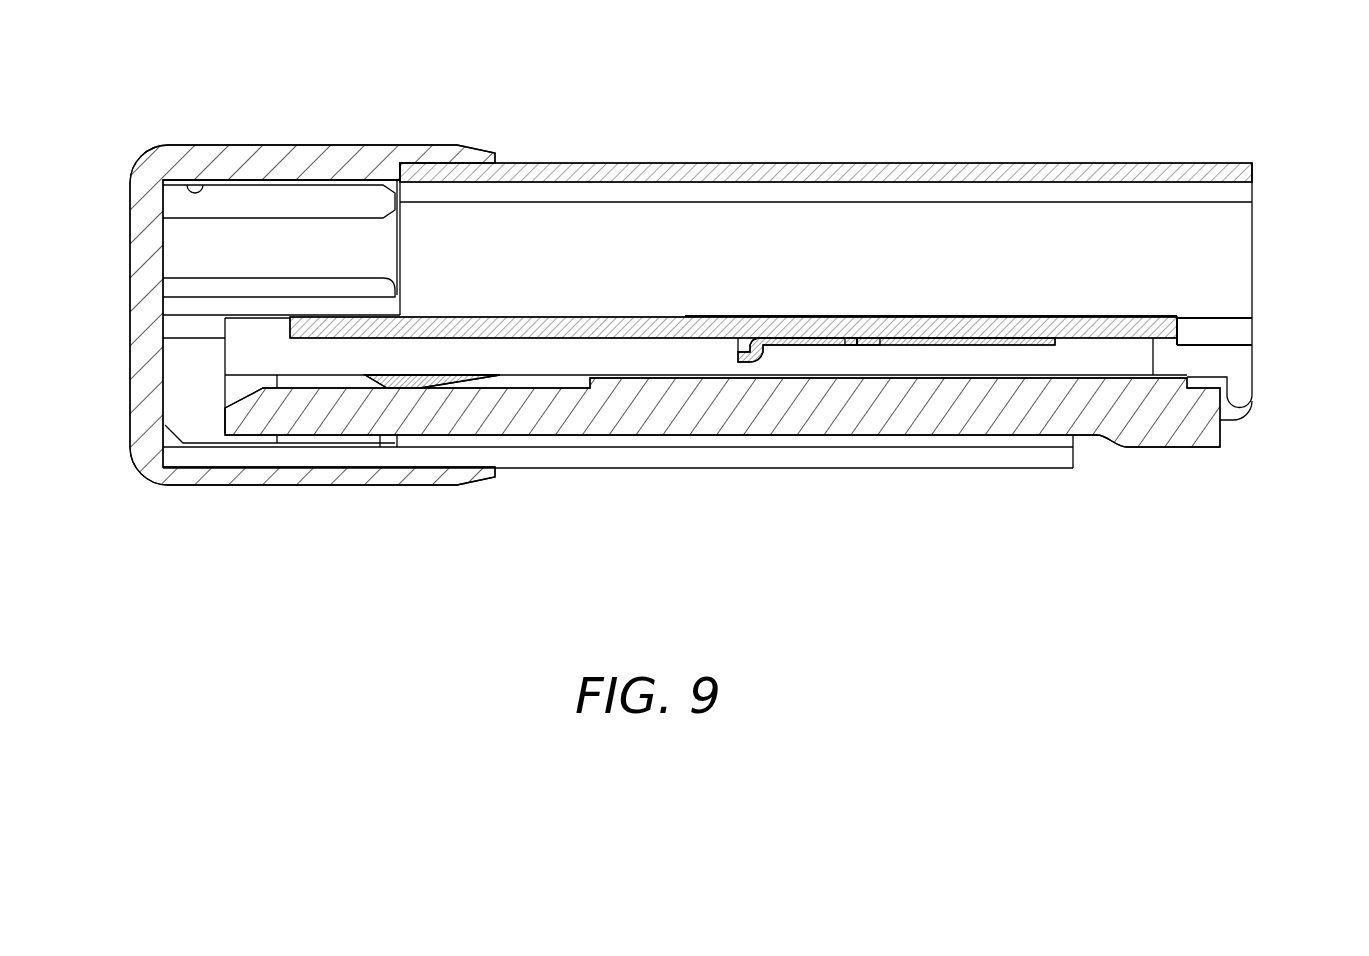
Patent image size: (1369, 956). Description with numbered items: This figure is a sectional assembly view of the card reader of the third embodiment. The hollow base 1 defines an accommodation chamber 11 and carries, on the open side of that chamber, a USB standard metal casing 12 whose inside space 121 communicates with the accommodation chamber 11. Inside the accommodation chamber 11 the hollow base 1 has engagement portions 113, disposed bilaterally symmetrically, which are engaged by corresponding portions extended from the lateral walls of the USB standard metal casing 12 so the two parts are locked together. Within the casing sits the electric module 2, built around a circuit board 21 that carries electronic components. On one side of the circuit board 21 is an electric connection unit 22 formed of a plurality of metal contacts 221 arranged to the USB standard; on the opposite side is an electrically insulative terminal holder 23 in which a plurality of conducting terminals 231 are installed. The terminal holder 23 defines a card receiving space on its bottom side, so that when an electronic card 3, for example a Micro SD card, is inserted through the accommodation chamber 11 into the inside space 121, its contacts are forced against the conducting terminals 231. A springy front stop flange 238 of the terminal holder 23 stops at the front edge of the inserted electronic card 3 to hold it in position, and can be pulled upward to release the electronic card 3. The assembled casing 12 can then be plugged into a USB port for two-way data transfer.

The hollow base 1 is at (320, 140).
The accommodation chamber 11 is at (199, 187).
The engagement portions 113 is at (188, 285).
The USB standard metal casing 12 is at (542, 170).
The inside space 121 is at (1239, 276).
The springy front stop flange 238 is at (1245, 380).
The electric module 2 is at (864, 95).
The circuit board 21 is at (750, 325).
The electric connection unit 22 is at (1082, 300).
The metal contacts 221 is at (978, 318).
The electrically insulative terminal holder 23 is at (812, 355).
The conducting terminals 231 is at (866, 342).
The electronic card 3 is at (1156, 436).